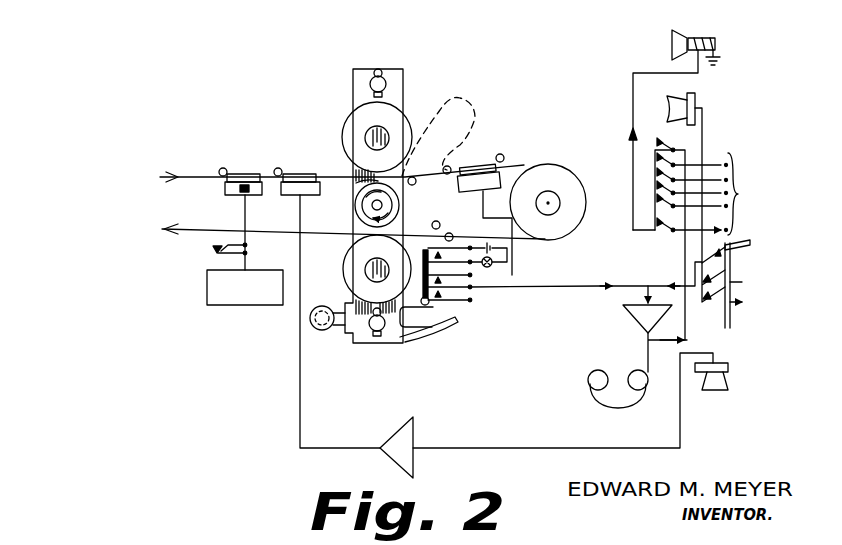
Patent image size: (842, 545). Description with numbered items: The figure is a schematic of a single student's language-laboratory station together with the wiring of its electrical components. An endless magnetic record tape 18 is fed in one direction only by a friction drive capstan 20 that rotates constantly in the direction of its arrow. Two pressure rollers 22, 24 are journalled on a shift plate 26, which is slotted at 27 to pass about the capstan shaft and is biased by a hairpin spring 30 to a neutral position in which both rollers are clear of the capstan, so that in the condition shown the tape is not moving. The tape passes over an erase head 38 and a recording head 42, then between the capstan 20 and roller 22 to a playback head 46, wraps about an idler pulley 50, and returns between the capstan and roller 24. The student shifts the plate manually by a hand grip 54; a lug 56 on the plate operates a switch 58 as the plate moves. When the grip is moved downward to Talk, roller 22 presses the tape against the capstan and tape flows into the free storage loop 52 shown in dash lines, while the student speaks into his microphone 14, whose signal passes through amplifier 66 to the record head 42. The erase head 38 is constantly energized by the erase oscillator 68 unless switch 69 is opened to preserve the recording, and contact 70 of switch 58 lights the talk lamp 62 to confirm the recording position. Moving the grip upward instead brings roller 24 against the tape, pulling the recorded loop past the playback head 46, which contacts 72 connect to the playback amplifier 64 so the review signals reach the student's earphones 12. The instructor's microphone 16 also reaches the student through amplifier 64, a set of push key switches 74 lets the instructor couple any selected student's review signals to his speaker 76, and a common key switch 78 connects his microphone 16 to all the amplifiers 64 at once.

The student's earphones 12 is at (630, 369).
The student's microphone 14 is at (728, 368).
The instructor's microphone 16 is at (668, 109).
The endless magnetic record tape 18 is at (196, 176).
The friction drive capstan 20 is at (404, 213).
The pressure roller 22 is at (390, 127).
The pressure roller 24 is at (390, 260).
The shift plate 26 is at (353, 89).
The slot 27 is at (358, 185).
The hairpin spring 30 is at (340, 306).
The erase head 38 is at (225, 189).
The recording head 42 is at (283, 196).
The playback head 46 is at (503, 168).
The idler pulley 50 is at (562, 192).
The storage loop 52 is at (472, 113).
The hand grip 54 is at (442, 327).
The lug 56 is at (416, 318).
The switch 58 is at (482, 309).
The talk lamp 62 is at (508, 266).
The playback amplifier 64 is at (630, 308).
The amplifier 66 is at (415, 440).
The erase oscillator 68 is at (207, 283).
The switch 69 is at (208, 254).
The contact 70 is at (455, 252).
The contacts 72 is at (462, 284).
The push key switches 74 is at (678, 146).
The speaker 76 is at (683, 34).
The common key switch 78 is at (752, 243).